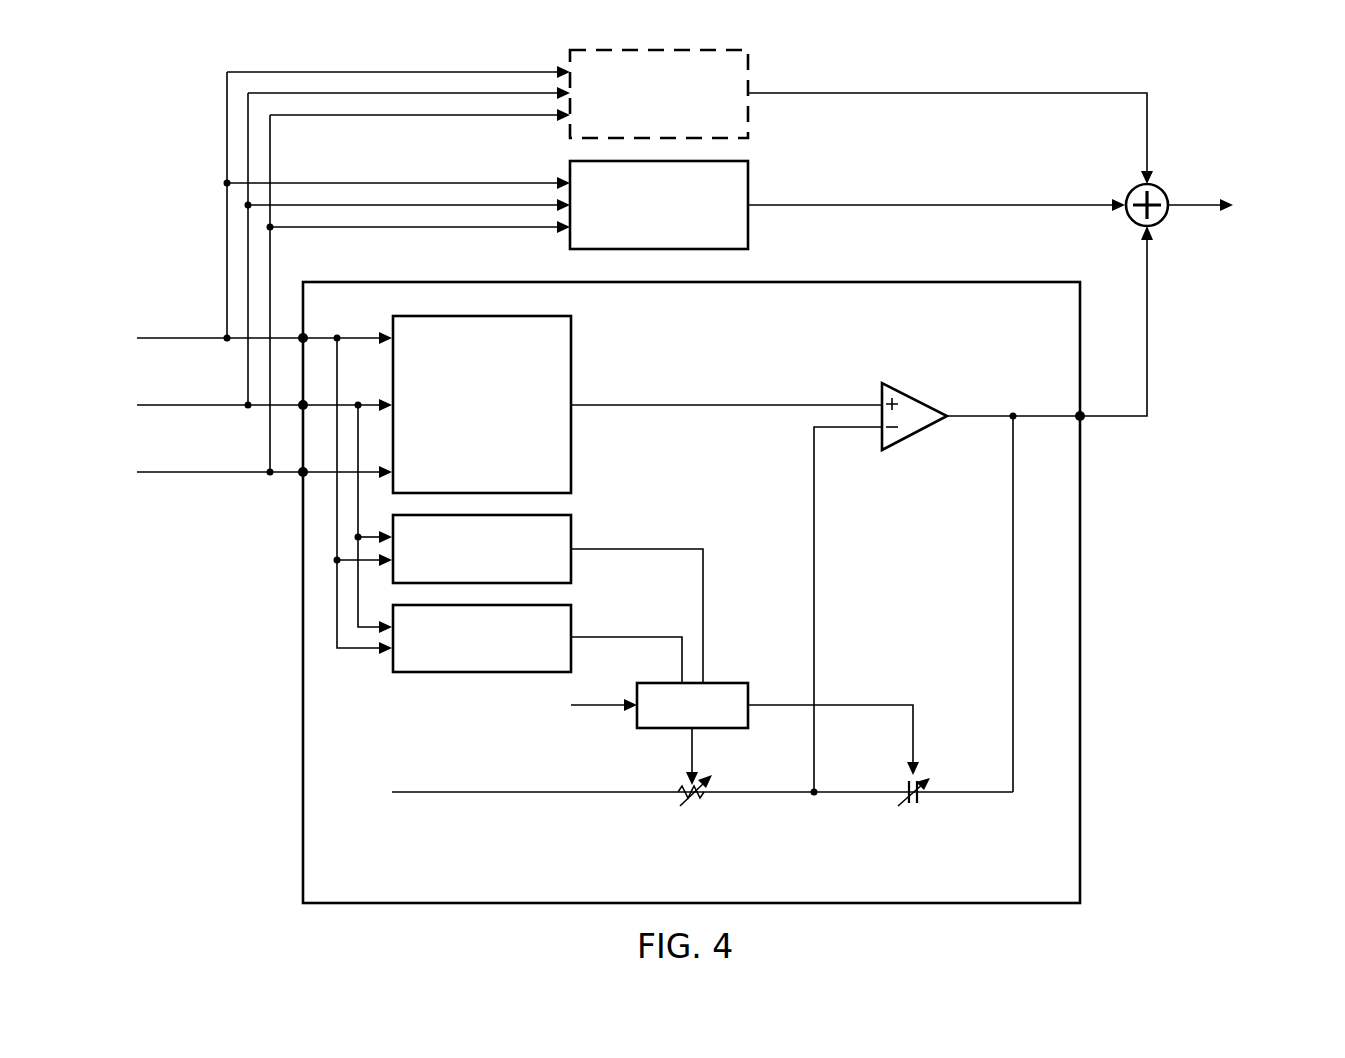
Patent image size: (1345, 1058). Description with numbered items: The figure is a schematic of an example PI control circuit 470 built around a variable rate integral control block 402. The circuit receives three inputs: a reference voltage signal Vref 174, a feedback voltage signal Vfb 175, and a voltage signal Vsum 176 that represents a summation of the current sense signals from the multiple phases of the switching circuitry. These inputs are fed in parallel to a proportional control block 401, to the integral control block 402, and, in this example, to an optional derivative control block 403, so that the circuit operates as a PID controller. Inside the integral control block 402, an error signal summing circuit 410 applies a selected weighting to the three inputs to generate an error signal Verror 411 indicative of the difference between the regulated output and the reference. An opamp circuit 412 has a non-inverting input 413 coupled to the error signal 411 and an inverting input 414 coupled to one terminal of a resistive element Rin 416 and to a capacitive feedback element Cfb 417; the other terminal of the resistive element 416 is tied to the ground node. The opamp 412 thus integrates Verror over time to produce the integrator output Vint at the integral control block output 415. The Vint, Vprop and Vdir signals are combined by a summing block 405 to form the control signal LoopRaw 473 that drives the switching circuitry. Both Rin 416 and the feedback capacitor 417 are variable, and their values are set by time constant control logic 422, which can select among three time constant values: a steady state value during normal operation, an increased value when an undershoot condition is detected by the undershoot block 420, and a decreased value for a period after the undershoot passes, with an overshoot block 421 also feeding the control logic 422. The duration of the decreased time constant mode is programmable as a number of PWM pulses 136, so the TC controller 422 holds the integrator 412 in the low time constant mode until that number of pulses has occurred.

The PI control circuit 470 is at (130, 93).
The derivative control block 403 is at (749, 105).
The proportional control block 401 is at (749, 217).
The variable rate integral control block 402 is at (897, 278).
The summing block 405 is at (1187, 173).
The LoopRaw output 473 is at (1197, 208).
The reference voltage signal Vref 174 is at (170, 337).
The feedback voltage signal Vfb 175 is at (170, 403).
The voltage signal Vsum 176 is at (170, 474).
The error signal summing circuit 410 is at (482, 404).
The error signal Verror 411 is at (637, 407).
The opamp circuit 412 is at (896, 417).
The non-inverting input 413 is at (873, 393).
The inverting input 414 is at (873, 437).
The integral control block output 415 is at (1088, 423).
The undershoot block 420 is at (572, 525).
The overshoot block 421 is at (480, 673).
The time constant control logic 422 is at (726, 682).
The PWM pulses 136 is at (603, 707).
The resistive element Rin 416 is at (693, 805).
The capacitive feedback element Cfb 417 is at (915, 808).